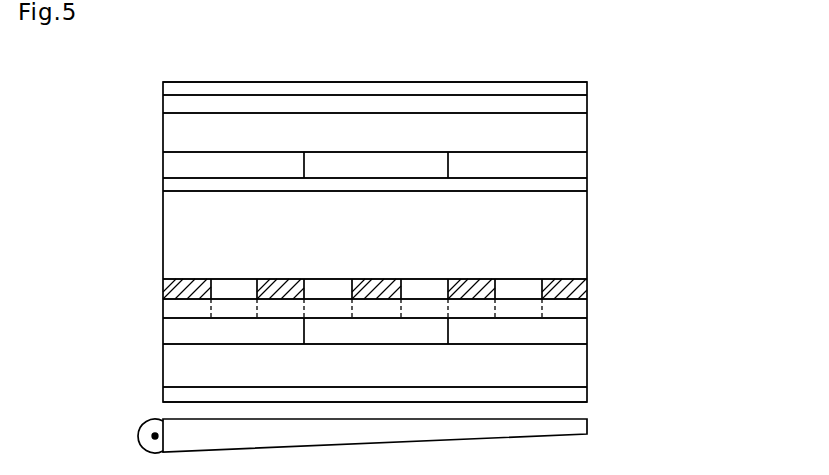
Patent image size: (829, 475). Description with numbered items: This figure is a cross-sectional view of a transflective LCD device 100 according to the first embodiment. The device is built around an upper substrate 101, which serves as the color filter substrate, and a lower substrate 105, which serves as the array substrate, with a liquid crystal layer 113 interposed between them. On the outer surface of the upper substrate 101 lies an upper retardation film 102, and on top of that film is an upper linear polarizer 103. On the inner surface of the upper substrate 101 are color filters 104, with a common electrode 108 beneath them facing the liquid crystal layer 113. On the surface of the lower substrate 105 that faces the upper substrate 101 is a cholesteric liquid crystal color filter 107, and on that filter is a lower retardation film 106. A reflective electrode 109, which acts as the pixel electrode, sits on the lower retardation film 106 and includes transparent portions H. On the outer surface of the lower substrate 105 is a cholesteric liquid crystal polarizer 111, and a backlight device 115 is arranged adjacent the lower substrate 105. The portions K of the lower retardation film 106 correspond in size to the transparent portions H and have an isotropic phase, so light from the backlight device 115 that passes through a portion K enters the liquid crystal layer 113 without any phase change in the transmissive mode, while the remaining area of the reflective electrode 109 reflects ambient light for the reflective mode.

The transflective LCD device 100 is at (672, 189).
The upper substrate 101 is at (588, 128).
The upper retardation film 102 is at (588, 106).
The upper linear polarizer 103 is at (588, 84).
The color filters 104 is at (588, 166).
The lower substrate 105 is at (588, 366).
The lower retardation film 106 is at (588, 306).
The cholesteric liquid crystal color filter 107 is at (588, 331).
The common electrode 108 is at (588, 188).
The reflective electrode 109 is at (588, 283).
The cholesteric liquid crystal polarizer 111 is at (588, 393).
The liquid crystal layer 113 is at (588, 223).
The backlight device 115 is at (588, 426).
The transparent portions H is at (517, 280).
The isotropic phase portions K is at (221, 310).